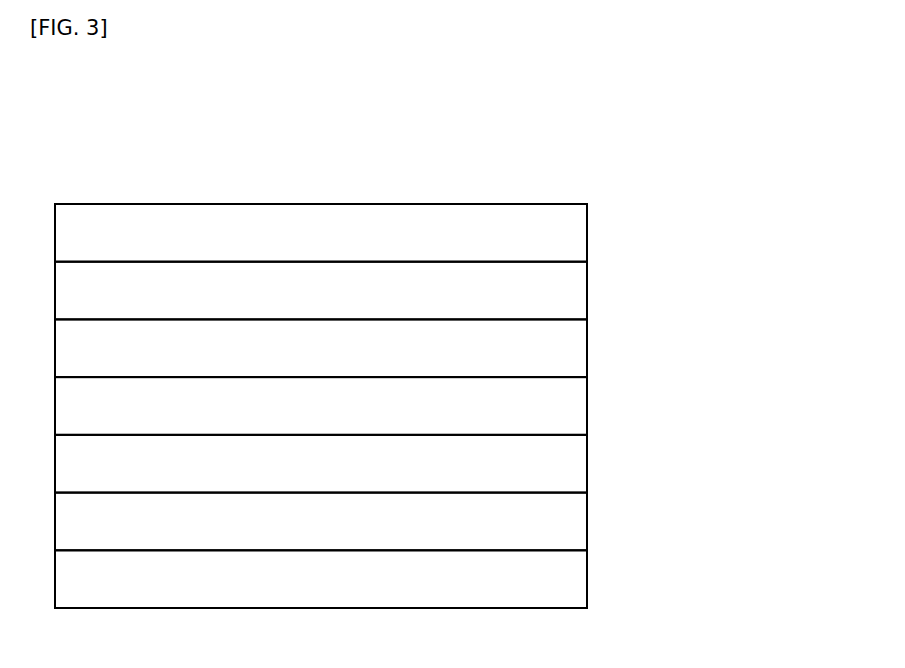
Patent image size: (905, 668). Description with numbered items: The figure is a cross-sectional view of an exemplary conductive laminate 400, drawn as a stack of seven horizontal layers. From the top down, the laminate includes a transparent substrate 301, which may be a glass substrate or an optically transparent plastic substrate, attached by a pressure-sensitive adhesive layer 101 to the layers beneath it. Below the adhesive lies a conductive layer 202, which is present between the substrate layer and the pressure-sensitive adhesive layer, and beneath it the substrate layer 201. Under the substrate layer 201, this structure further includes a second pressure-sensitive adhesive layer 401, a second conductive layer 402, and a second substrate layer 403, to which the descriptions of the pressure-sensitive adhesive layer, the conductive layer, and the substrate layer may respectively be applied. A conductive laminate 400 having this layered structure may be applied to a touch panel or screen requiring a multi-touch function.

The conductive laminate 400 is at (385, 170).
The transparent substrate 301 is at (587, 239).
The pressure-sensitive adhesive layer 101 is at (587, 295).
The conductive layer 202 is at (587, 351).
The substrate layer 201 is at (587, 406).
The second pressure-sensitive adhesive layer 401 is at (587, 468).
The second conductive layer 402 is at (587, 522).
The second substrate layer 403 is at (587, 577).